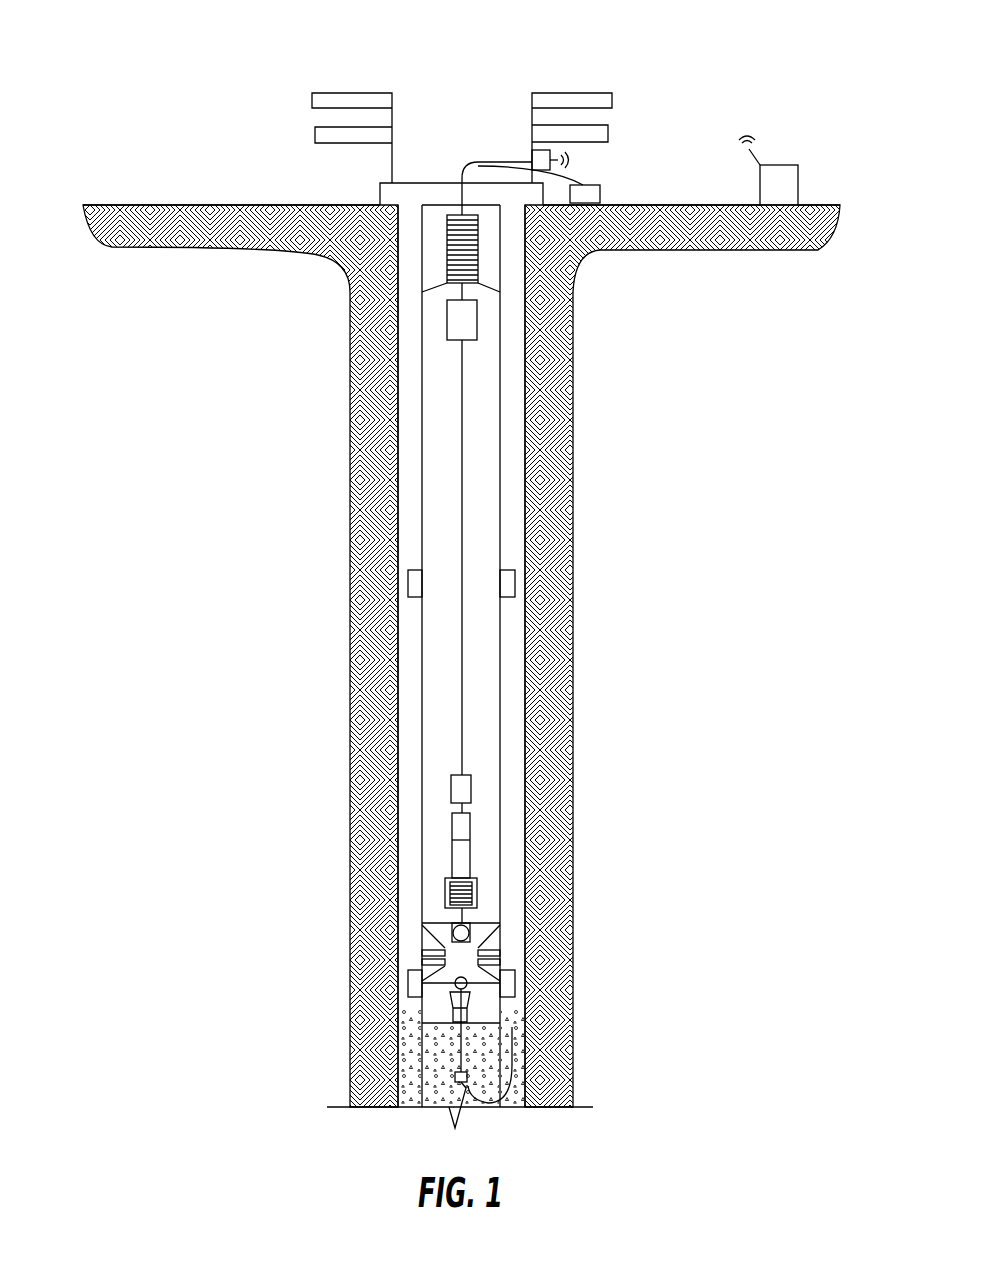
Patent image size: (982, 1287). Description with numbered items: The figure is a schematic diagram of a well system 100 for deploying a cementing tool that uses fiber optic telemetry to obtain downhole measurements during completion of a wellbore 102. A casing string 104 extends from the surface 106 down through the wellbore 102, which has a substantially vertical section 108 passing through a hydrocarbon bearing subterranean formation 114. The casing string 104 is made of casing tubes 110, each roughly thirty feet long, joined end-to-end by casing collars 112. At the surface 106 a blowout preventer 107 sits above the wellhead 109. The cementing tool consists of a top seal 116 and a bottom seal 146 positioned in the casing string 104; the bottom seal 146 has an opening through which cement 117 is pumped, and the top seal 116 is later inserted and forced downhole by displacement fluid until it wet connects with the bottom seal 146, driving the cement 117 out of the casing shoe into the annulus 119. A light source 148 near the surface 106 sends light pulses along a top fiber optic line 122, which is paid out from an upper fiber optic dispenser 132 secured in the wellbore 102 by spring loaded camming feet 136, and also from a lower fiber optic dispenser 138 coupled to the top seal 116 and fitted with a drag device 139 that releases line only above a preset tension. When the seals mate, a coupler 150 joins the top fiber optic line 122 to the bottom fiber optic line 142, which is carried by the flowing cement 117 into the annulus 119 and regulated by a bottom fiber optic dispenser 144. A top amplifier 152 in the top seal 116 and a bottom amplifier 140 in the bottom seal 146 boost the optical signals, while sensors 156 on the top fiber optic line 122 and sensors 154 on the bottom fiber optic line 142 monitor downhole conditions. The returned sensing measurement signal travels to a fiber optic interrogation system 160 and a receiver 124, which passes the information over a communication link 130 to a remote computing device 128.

The well system 100 is at (176, 65).
The wellbore 102 is at (527, 258).
The casing string 104 is at (502, 393).
The surface 106 is at (207, 205).
The blowout preventer 107 is at (353, 93).
The substantially vertical section 108 is at (502, 645).
The wellhead 109 is at (378, 195).
The casing tubes 110 is at (422, 370).
The casing collars 112 is at (515, 582).
The hydrocarbon bearing subterranean formation 114 is at (332, 821).
The top seal 116 is at (483, 932).
The cement 117 is at (437, 1043).
The annulus 119 is at (543, 1067).
The top fiber optic line 122 is at (462, 438).
The receiver 124 is at (532, 152).
The computing device 128 is at (780, 165).
The communication link 130 is at (577, 160).
The upper fiber optic dispenser 132 is at (447, 262).
The spring loaded camming feet 136 is at (490, 288).
The lower fiber optic dispenser 138 is at (452, 888).
The drag device 139 is at (477, 893).
The bottom amplifier 140 is at (472, 1000).
The bottom fiber optic line 142 is at (520, 1070).
The bottom fiber optic dispenser 144 is at (515, 1047).
The bottom seal 146 is at (443, 968).
The light source 148 is at (600, 193).
The coupler 150 is at (467, 983).
The top amplifier 152 is at (453, 930).
The sensors 154 is at (455, 1078).
The sensors 156 is at (451, 790).
The fiber optic interrogation system 160 is at (447, 320).